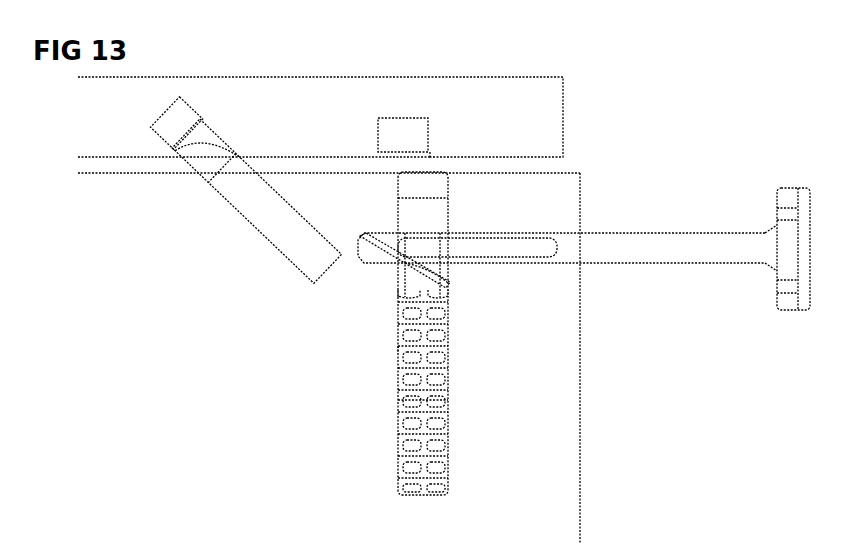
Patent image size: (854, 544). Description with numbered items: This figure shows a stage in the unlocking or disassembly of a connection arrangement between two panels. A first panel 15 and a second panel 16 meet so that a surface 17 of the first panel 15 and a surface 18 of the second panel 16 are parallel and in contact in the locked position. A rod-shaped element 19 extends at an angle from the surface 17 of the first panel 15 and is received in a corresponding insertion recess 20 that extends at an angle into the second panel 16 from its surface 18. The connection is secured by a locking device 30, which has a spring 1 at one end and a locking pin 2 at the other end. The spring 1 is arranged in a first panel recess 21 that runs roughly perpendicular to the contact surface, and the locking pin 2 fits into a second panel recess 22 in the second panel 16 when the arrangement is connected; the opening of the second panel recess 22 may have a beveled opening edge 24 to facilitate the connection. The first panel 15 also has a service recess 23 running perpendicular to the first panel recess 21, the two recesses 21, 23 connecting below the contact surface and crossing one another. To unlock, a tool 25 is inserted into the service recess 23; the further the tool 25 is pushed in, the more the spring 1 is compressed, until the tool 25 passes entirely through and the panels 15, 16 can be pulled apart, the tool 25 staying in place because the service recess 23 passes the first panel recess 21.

The spring 1 is at (423, 405).
The locking pin 2 is at (398, 212).
The first panel 15 is at (550, 400).
The second panel 16 is at (540, 123).
The surface of the first panel 17 is at (567, 175).
The surface of the second panel 18 is at (515, 158).
The rod-shaped element 19 is at (205, 170).
The insertion recess 20 is at (192, 109).
The first panel recess 21 is at (445, 437).
The second panel recess 22 is at (378, 133).
The service recess 23 is at (377, 265).
The beveled opening edge 24 is at (430, 157).
The tool 25 is at (694, 246).
The locking device 30 is at (394, 350).